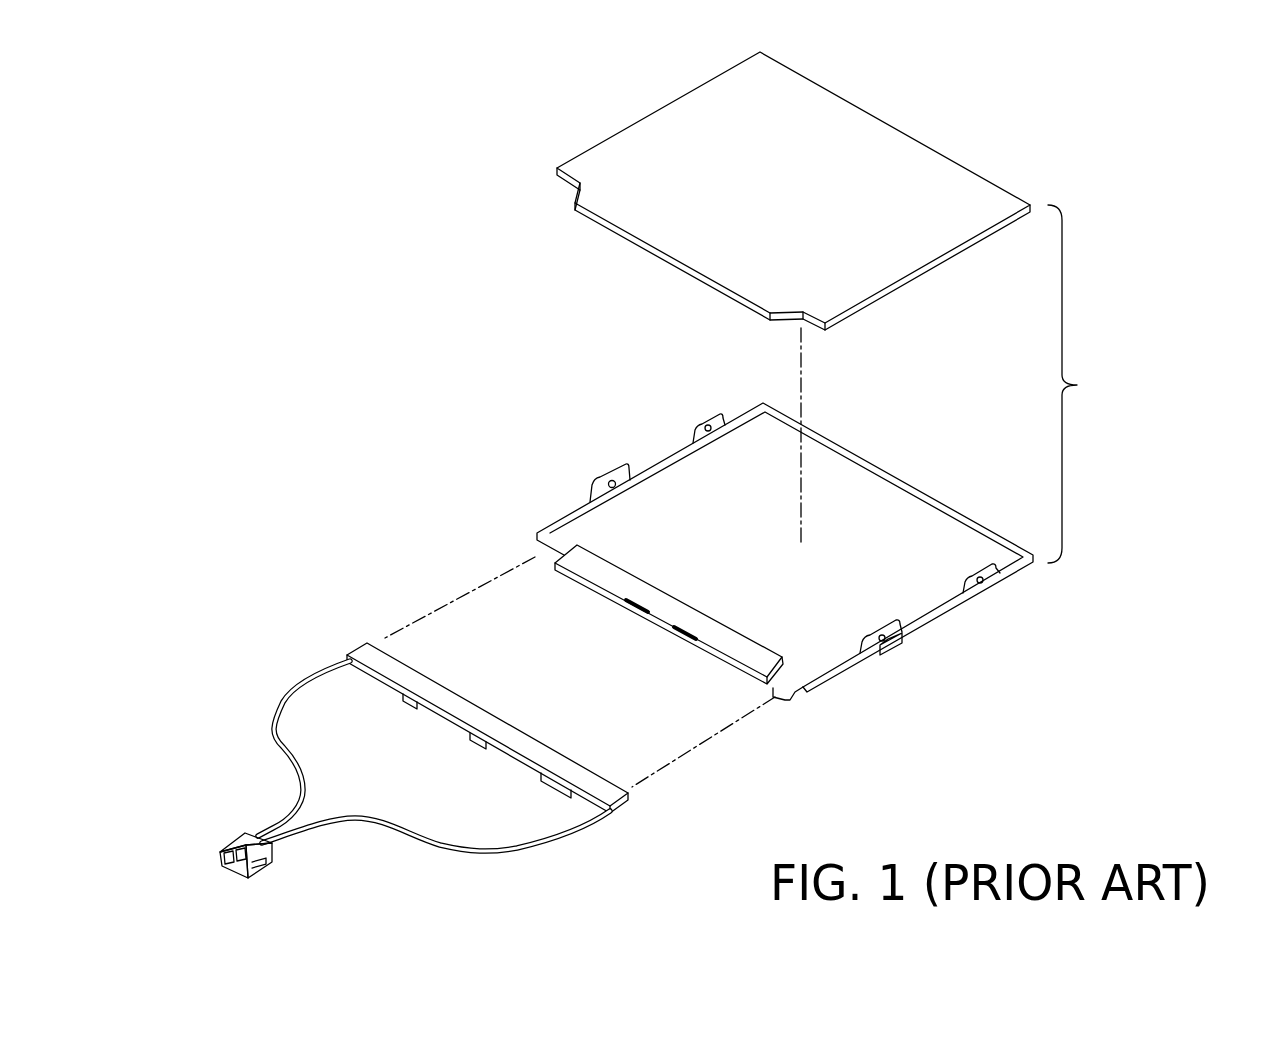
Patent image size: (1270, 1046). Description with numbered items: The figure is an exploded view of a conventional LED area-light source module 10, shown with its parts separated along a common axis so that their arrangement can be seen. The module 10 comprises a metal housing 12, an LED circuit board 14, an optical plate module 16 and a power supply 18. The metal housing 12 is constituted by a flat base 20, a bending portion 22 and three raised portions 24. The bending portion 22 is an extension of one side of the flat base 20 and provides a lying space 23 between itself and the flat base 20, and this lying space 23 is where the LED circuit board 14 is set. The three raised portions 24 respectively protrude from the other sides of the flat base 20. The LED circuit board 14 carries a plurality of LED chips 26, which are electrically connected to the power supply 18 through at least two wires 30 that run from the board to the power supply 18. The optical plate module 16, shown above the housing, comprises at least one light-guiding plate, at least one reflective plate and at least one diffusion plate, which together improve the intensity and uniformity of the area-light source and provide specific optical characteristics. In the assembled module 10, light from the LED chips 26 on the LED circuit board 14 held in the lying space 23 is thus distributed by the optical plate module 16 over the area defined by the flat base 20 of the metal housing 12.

The LED area-light source module 10 is at (1121, 404).
The metal housing 12 is at (721, 582).
The LED circuit board 14 is at (487, 734).
The optical plate module 16 is at (678, 128).
The power supply 18 is at (240, 842).
The flat base 20 is at (755, 535).
The bending portion 22 is at (595, 572).
The lying space 23 is at (780, 679).
The raised portions 24 is at (660, 467).
The LED chips 26 is at (412, 703).
The wires 30 is at (314, 686).